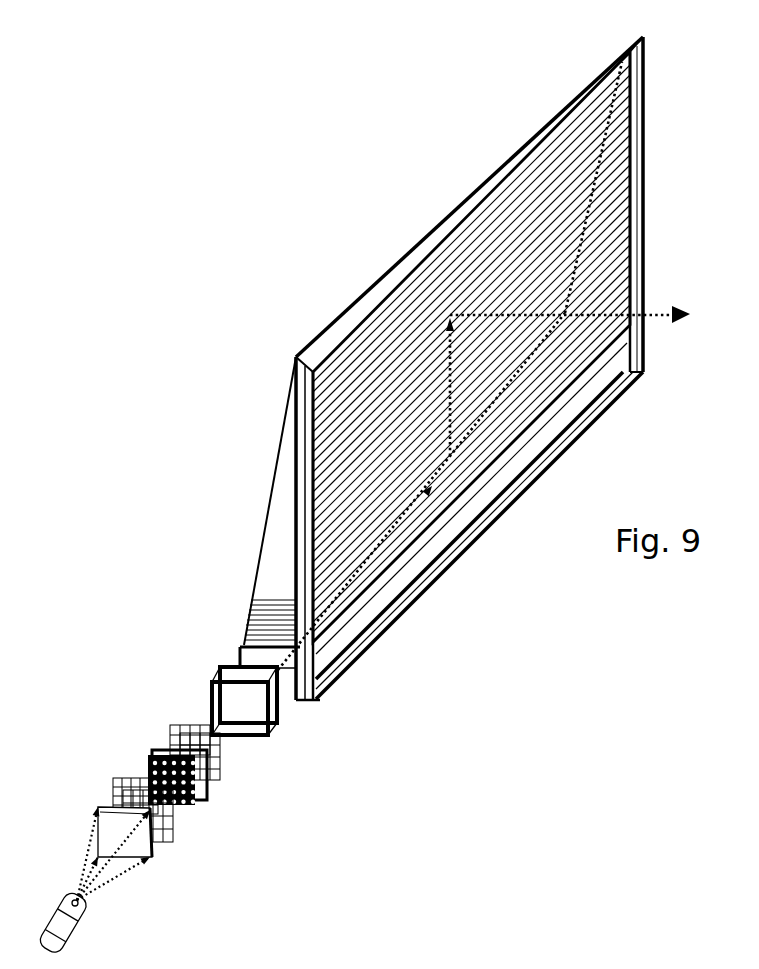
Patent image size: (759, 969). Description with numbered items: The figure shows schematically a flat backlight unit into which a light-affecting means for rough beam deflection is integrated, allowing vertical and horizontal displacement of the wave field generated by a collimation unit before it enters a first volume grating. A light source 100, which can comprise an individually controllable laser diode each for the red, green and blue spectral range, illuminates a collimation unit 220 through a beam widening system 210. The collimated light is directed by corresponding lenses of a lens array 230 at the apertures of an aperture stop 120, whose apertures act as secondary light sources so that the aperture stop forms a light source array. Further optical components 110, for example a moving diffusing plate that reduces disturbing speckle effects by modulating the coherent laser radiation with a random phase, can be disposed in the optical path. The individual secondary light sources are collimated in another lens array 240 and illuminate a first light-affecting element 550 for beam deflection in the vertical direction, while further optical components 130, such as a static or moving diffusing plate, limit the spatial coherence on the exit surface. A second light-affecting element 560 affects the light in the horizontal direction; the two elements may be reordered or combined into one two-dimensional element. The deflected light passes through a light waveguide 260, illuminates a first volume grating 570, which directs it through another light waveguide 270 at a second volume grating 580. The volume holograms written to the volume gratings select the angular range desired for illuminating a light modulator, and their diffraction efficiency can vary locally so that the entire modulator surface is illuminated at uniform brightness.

The light source 100 is at (60, 933).
The beam widening system 210 is at (69, 901).
The aperture stop 120 is at (113, 785).
The further optical components 110 is at (173, 823).
The collimation unit 220 is at (140, 838).
The lens array 230 is at (158, 827).
The further optical components 130 is at (153, 751).
The lens array 240 is at (205, 740).
The first light-affecting element 550 is at (213, 708).
The second light-affecting element 560 is at (277, 720).
The light waveguide 260 is at (250, 658).
The first volume grating 570 is at (280, 625).
The light waveguide 270 is at (278, 518).
The second volume grating 580 is at (620, 112).